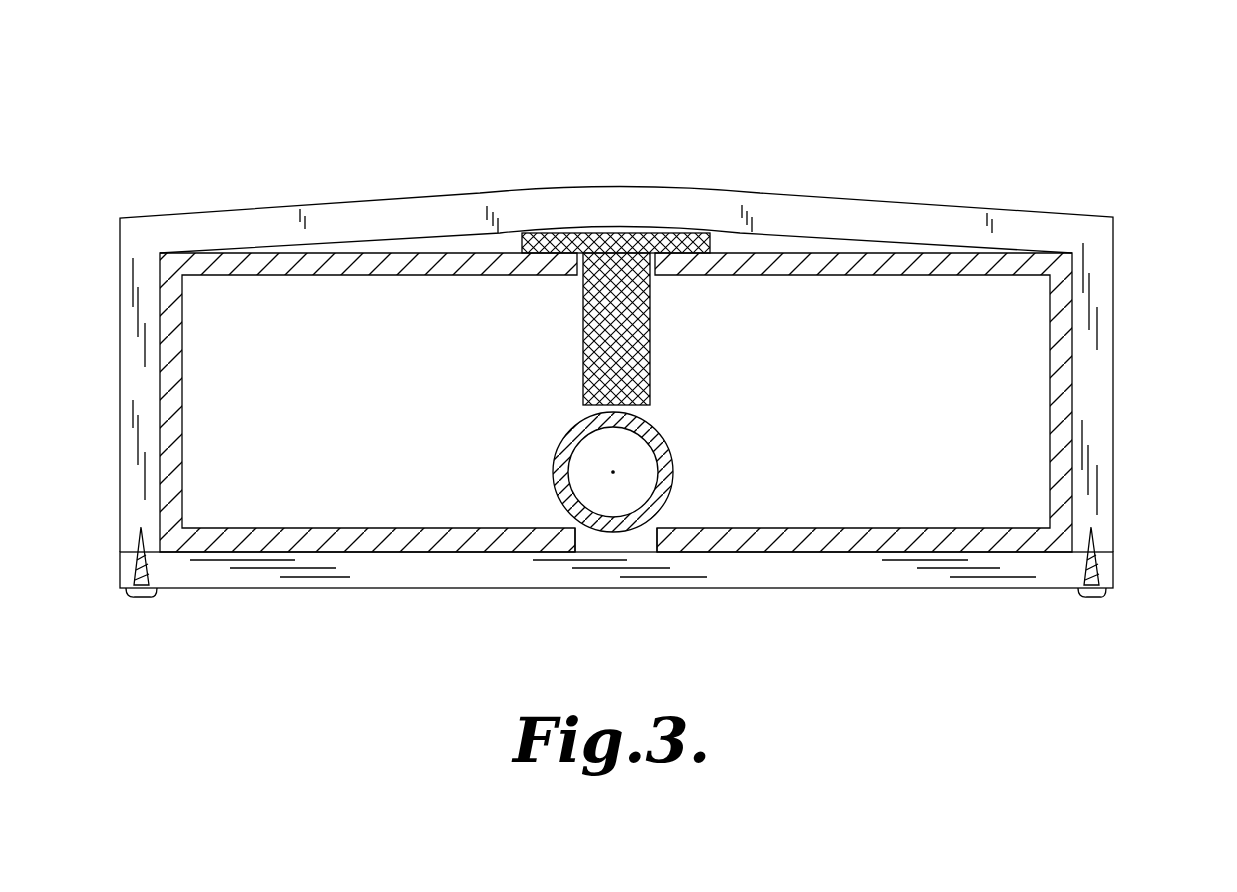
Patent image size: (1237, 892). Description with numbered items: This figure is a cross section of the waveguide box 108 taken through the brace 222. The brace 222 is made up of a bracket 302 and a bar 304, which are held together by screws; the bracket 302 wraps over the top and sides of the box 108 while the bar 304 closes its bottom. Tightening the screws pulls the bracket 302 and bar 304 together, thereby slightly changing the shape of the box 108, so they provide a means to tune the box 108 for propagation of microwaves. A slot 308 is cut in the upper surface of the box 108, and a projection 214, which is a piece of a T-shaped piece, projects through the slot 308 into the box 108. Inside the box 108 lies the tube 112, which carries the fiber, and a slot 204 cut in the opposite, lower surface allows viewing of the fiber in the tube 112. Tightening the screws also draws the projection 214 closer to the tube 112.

The brace 222 is at (1088, 200).
The bracket 302 is at (1115, 320).
The box 108 is at (1047, 368).
The slot 308 is at (577, 277).
The projection 214 is at (651, 340).
The tube 112 is at (668, 453).
The slot 204 is at (637, 537).
The bar 304 is at (928, 590).